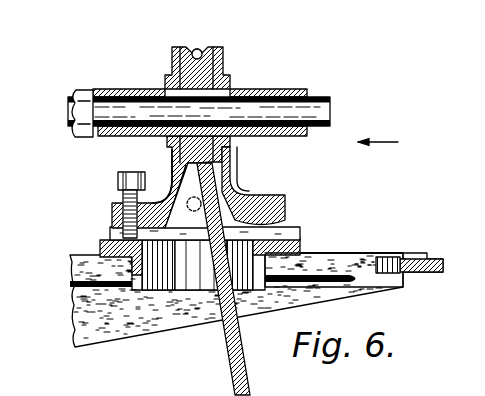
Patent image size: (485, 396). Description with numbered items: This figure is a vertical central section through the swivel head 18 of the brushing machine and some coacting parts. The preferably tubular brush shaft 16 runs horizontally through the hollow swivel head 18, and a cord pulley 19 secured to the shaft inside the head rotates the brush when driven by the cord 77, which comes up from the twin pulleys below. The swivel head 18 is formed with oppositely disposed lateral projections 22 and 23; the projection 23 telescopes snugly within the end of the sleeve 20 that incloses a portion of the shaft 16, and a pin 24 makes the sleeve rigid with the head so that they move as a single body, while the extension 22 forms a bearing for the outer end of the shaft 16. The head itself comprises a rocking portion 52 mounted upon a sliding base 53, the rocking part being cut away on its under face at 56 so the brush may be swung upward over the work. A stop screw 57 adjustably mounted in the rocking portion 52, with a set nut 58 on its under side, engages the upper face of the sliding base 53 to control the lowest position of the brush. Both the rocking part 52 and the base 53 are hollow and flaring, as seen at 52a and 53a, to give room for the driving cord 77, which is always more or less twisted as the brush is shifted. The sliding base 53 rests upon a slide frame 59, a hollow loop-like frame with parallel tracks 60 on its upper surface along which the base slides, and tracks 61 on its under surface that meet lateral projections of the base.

The shaft 16 is at (319, 102).
The swivel head 18 is at (250, 196).
The cord pulley 19 is at (221, 52).
The sleeve 20 is at (86, 91).
The lateral projection 22 is at (264, 89).
The lateral projection 23 is at (119, 135).
The pin 24 is at (133, 90).
The rocking portion 52 is at (171, 146).
The hollow flaring portion of rocking part 52a is at (240, 178).
The sliding base 53 is at (298, 242).
The hollow flaring portion of base member 53a is at (258, 297).
The cut-away 56 is at (272, 227).
The stop screw 57 is at (118, 183).
The set nut 58 is at (117, 232).
The slide frame 59 is at (238, 306).
The tracks 60 is at (366, 257).
The tracks 61 is at (307, 283).
The cord 77 is at (197, 49).